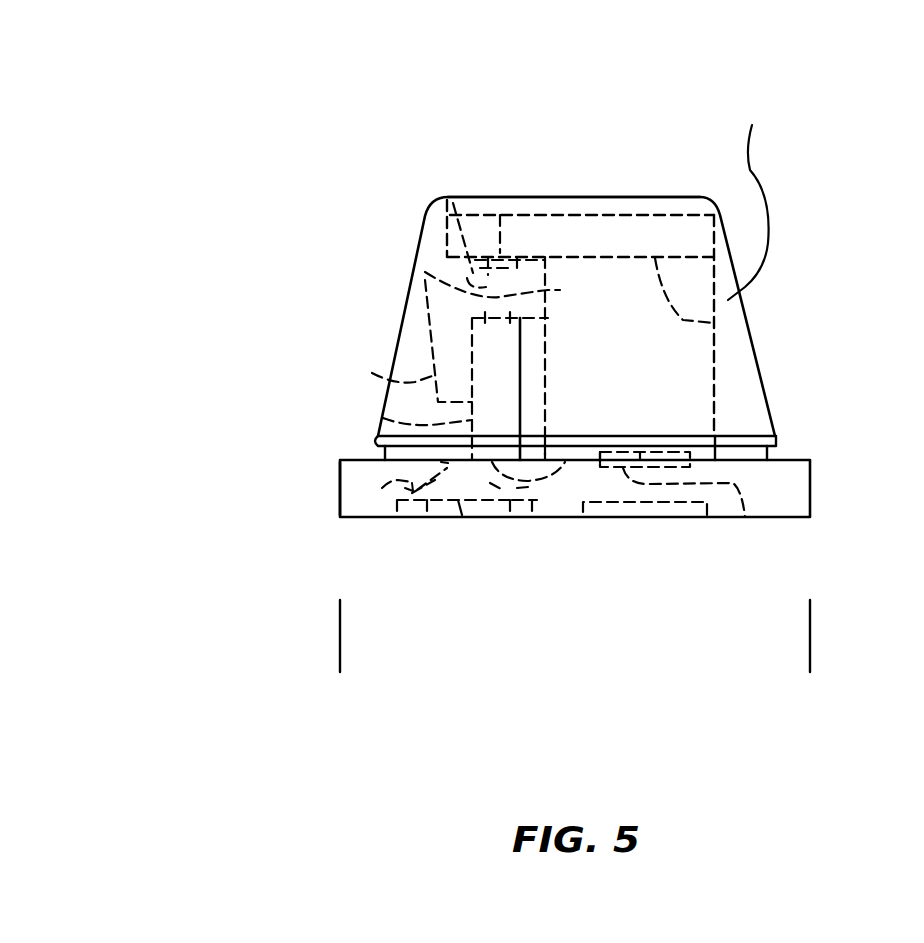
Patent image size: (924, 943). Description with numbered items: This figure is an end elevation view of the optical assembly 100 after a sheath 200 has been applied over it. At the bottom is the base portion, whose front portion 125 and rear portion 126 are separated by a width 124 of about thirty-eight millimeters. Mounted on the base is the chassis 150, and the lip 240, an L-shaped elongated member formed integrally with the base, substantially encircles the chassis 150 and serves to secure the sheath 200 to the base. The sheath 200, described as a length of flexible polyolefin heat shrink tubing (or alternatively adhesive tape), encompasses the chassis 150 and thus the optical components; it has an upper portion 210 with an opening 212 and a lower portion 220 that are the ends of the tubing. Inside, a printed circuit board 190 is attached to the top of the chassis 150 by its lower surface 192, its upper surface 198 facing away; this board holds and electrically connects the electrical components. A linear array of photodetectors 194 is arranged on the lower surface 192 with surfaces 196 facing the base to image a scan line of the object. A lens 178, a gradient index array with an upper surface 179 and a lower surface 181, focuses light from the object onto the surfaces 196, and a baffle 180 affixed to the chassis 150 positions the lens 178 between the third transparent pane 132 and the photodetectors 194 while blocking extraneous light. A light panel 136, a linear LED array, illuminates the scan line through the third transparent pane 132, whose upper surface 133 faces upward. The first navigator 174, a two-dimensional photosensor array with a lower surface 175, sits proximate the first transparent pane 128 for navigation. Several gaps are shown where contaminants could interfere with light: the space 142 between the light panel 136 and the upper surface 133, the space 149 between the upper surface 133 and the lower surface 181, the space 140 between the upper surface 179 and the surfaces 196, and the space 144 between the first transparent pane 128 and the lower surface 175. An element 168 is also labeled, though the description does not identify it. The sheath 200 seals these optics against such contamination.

The optical assembly 100 is at (278, 106).
The width 124 is at (798, 656).
The front portion 125 is at (810, 487).
The rear portion 126 is at (340, 487).
The first transparent pane 128 is at (643, 505).
The third transparent pane 132 is at (462, 517).
The upper surface of third transparent pane 133 is at (540, 485).
The light panel 136 is at (387, 488).
The space 140 is at (402, 270).
The space 142 is at (427, 520).
The space 144 is at (743, 520).
The space 149 is at (500, 485).
The chassis 150 is at (735, 366).
The lens 168 is at (770, 217).
The first navigator 174 is at (678, 452).
The lower surface of first navigator 175 is at (622, 452).
The lens 178 is at (365, 417).
The upper surface of lens 179 is at (562, 296).
The baffle 180 is at (372, 373).
The lower surface of lens 181 is at (570, 460).
The printed circuit board 190 is at (420, 232).
The lower surface of printed circuit board 192 is at (714, 323).
The linear array of photodetectors 194 is at (497, 212).
The surfaces of photodetectors 196 is at (453, 200).
The upper surface of printed circuit board 198 is at (615, 215).
The sheath 200 is at (390, 330).
The upper portion of sheath 210 is at (691, 197).
The opening 212 is at (560, 197).
The lower portion of sheath 220 is at (773, 453).
The lip 240 is at (746, 428).